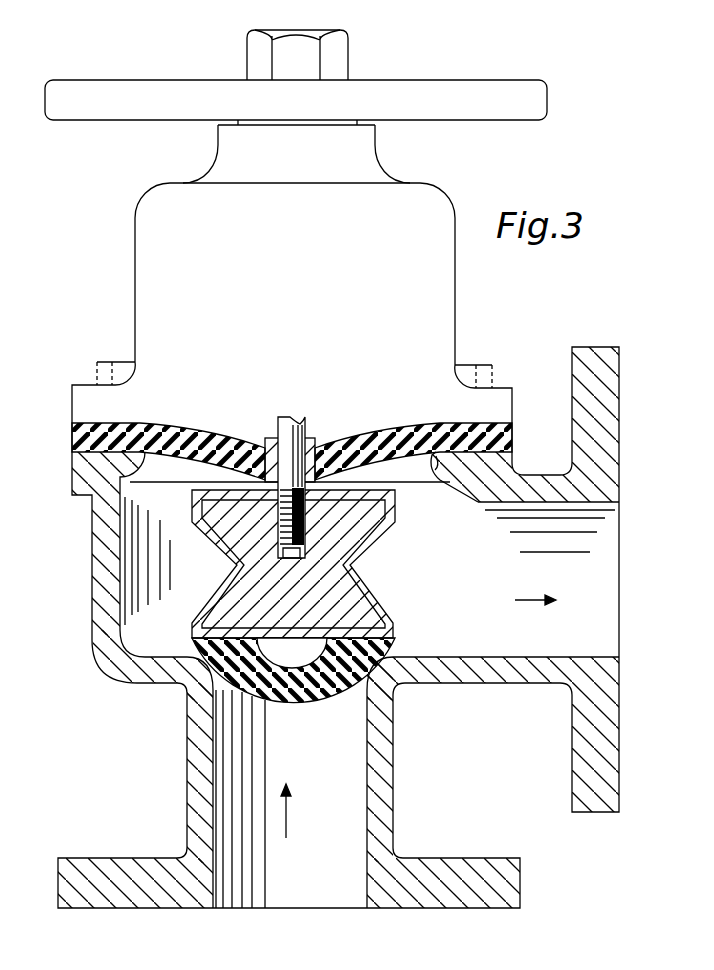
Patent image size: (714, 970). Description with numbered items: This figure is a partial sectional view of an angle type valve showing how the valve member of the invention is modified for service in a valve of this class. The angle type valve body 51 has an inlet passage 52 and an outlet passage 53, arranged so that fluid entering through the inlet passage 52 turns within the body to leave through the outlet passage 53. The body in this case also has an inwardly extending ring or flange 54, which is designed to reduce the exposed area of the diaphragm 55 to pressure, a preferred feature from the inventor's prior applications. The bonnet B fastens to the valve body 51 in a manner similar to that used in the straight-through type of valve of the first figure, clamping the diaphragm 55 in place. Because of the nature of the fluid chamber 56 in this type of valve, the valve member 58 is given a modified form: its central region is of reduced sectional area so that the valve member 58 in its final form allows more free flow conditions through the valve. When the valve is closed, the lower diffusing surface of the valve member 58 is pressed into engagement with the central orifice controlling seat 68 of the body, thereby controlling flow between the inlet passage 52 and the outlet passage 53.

The bonnet B is at (455, 325).
The valve body 51 is at (398, 743).
The inlet passage 52 is at (330, 888).
The outlet passage 53 is at (603, 571).
The inwardly extending ring or flange 54 is at (433, 470).
The diaphragm 55 is at (512, 440).
The fluid chamber 56 is at (140, 570).
The valve member 58 is at (372, 579).
The central orifice controlling seat 68 is at (386, 664).